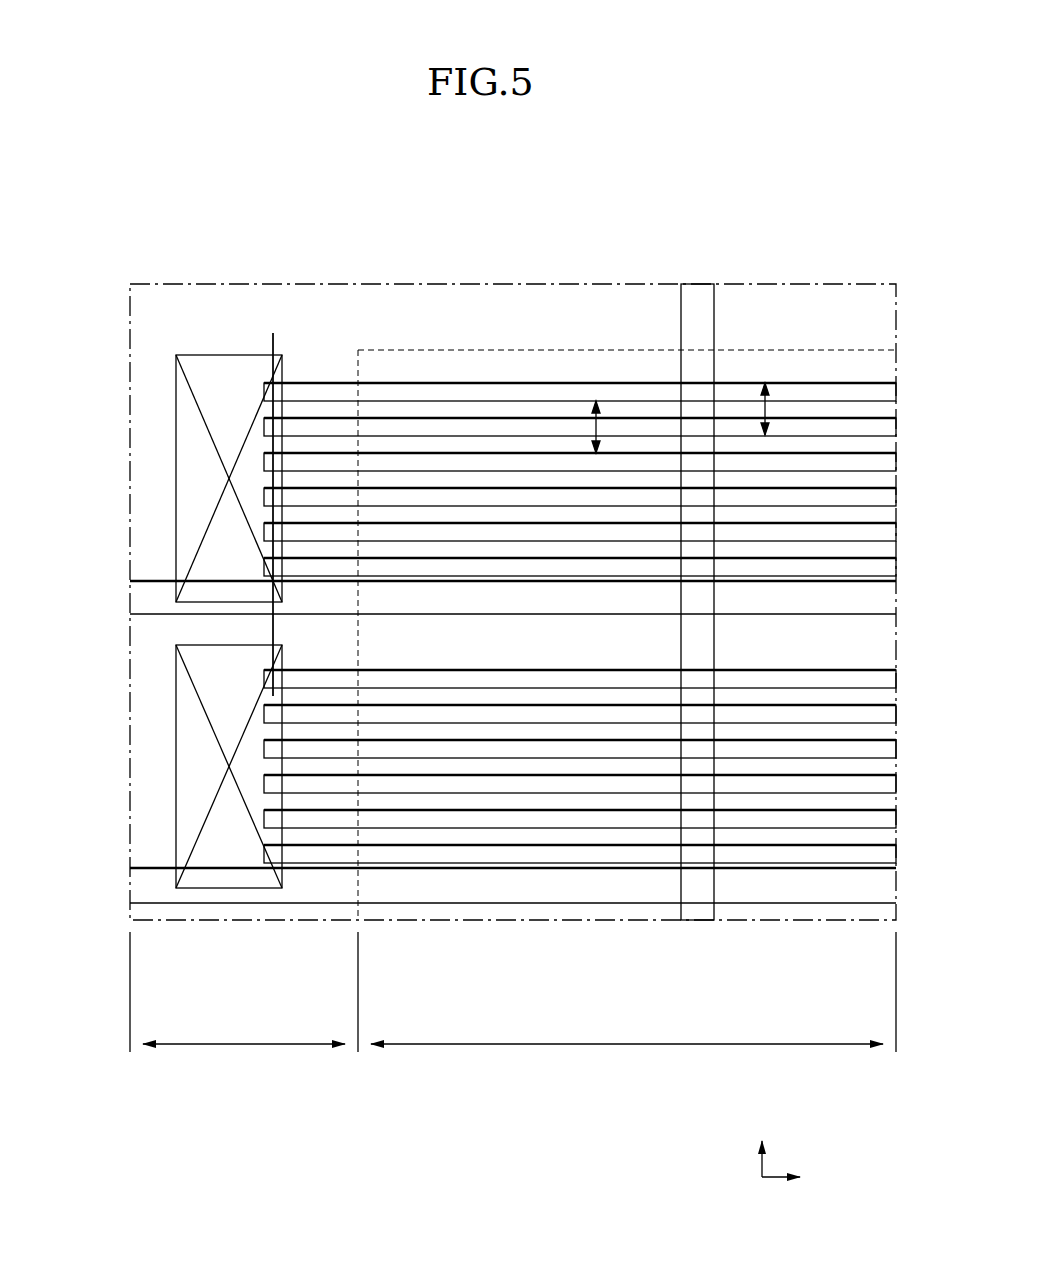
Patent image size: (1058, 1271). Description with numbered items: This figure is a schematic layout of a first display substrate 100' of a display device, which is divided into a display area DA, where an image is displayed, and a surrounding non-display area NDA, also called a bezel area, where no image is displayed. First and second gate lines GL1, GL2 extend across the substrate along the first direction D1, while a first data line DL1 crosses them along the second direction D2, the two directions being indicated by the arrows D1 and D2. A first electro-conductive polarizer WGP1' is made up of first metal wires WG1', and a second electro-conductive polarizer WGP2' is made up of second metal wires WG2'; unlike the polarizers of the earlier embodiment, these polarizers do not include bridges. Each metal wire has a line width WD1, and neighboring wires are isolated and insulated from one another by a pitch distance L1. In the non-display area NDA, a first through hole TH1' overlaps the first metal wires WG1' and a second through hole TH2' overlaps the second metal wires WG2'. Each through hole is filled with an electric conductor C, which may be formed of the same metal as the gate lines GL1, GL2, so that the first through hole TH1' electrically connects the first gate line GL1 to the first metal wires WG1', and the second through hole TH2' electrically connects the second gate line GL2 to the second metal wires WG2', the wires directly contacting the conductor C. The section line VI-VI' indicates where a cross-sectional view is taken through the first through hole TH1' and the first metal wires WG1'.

The first display substrate 100' is at (513, 532).
The first metal wires WG1' is at (580, 405).
The first electro-conductive polarizer WGP1' is at (580, 317).
The first line width WD1 is at (596, 428).
The first data line DL1 is at (697, 290).
The pitch distance L1 is at (765, 407).
The section line VI is at (172, 510).
The section line VI' is at (172, 522).
The electric conductor C is at (205, 473).
The first through hole TH1' is at (166, 478).
The second through hole TH2' is at (166, 766).
The first gate line GL1 is at (140, 596).
The second gate line GL2 is at (140, 884).
The second electro-conductive polarizer WGP2' is at (580, 825).
The second metal wires WG2' is at (580, 825).
The non-display area NDA is at (244, 1004).
The display area DA is at (633, 1004).
The first direction D1 is at (806, 1180).
The second direction D2 is at (762, 1138).